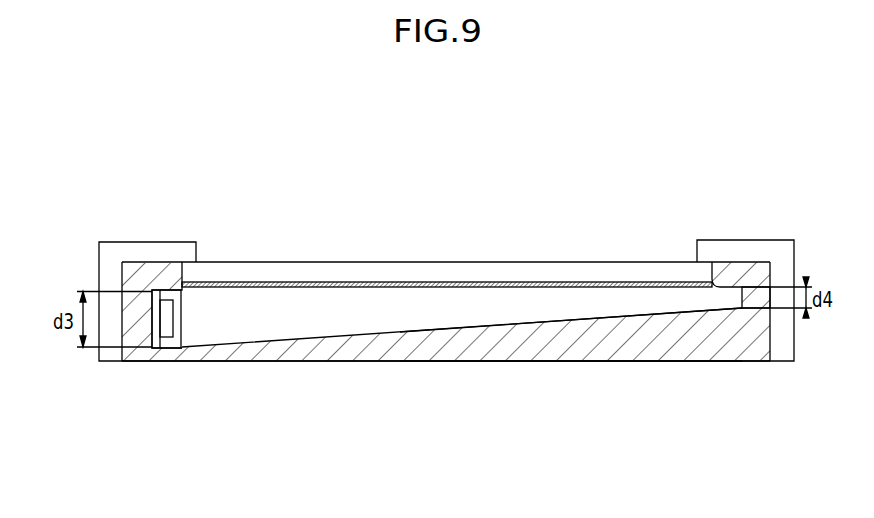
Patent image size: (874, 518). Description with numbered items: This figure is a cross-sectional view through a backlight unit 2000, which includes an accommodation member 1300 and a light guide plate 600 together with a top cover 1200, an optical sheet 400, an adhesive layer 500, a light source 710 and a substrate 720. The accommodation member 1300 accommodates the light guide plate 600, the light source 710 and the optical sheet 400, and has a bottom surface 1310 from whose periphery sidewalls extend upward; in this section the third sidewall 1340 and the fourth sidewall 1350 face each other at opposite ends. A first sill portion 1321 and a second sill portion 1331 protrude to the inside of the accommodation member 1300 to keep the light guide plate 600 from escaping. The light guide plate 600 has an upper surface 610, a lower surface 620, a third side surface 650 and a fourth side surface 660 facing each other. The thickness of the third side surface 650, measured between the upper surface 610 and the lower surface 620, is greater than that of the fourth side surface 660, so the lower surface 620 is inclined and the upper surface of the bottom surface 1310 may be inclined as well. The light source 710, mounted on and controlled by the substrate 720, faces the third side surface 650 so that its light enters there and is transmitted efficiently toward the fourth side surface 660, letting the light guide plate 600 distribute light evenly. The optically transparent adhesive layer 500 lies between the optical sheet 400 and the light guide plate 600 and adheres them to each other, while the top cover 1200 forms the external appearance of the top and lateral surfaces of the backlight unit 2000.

The backlight unit 2000 is at (577, 101).
The top cover 1200 is at (103, 263).
The accommodation member 1300 is at (707, 435).
The bottom surface 1310 is at (437, 350).
The first sill portion 1321 is at (170, 273).
The second sill portion 1331 is at (723, 268).
The third sidewall 1340 is at (138, 337).
The fourth sidewall 1350 is at (757, 330).
The optical sheet 400 is at (575, 275).
The adhesive layer 500 is at (628, 282).
The light guide plate 600 is at (527, 306).
The upper surface 610 is at (590, 301).
The lower surface 620 is at (645, 314).
The third side surface 650 is at (180, 330).
The fourth side surface 660 is at (745, 298).
The light source 710 is at (182, 313).
The substrate 720 is at (152, 309).